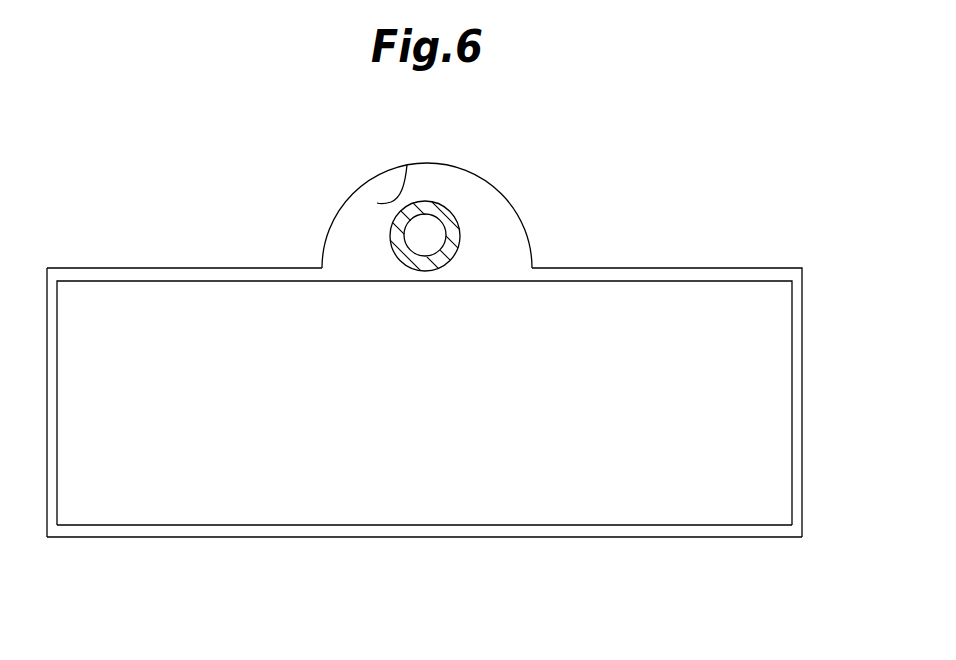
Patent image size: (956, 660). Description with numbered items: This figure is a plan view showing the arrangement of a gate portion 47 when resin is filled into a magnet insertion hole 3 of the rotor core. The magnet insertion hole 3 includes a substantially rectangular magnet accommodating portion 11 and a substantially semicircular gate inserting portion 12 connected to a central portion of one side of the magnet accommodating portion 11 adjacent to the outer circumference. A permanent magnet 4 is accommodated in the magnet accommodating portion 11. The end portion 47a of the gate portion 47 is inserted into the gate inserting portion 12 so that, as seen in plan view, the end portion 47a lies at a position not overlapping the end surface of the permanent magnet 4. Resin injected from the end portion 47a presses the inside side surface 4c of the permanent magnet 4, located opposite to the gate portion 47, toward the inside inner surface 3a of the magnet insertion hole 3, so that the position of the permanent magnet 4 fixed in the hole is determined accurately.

The magnet insertion hole 3 is at (455, 538).
The inside inner surface 3a is at (674, 537).
The permanent magnet 4 is at (775, 431).
The inside side surface 4c is at (260, 528).
The magnet accommodating portion 11 is at (48, 453).
The gate inserting portion 12 is at (377, 203).
The gate portion 47 is at (467, 203).
The end portion 47a is at (443, 247).